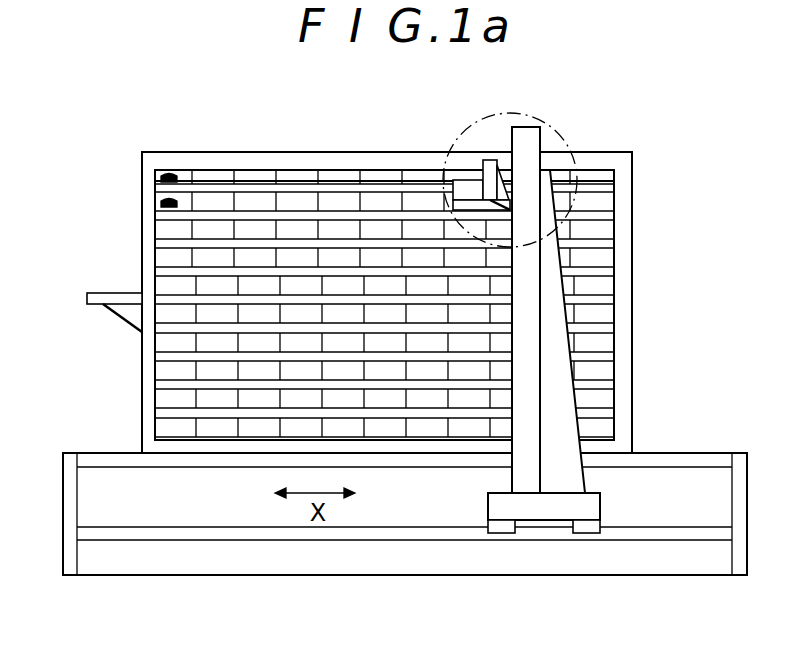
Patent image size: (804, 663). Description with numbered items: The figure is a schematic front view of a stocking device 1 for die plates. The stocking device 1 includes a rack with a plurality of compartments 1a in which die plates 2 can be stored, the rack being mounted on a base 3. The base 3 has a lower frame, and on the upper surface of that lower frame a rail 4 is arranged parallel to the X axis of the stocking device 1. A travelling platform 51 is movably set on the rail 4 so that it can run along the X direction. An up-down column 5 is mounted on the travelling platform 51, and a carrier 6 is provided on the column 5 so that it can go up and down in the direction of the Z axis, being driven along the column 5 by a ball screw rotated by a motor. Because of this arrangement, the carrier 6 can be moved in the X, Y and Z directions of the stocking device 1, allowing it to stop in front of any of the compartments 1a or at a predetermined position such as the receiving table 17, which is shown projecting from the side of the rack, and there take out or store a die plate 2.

The stocking device 1 is at (141, 170).
The compartments 1a is at (162, 232).
The die plates 2 is at (173, 202).
The base 3 is at (692, 452).
The rail 4 is at (228, 524).
The up-down column 5 is at (535, 143).
The travelling platform 51 is at (592, 508).
The carrier 6 is at (456, 182).
The receiving table 17 is at (102, 303).